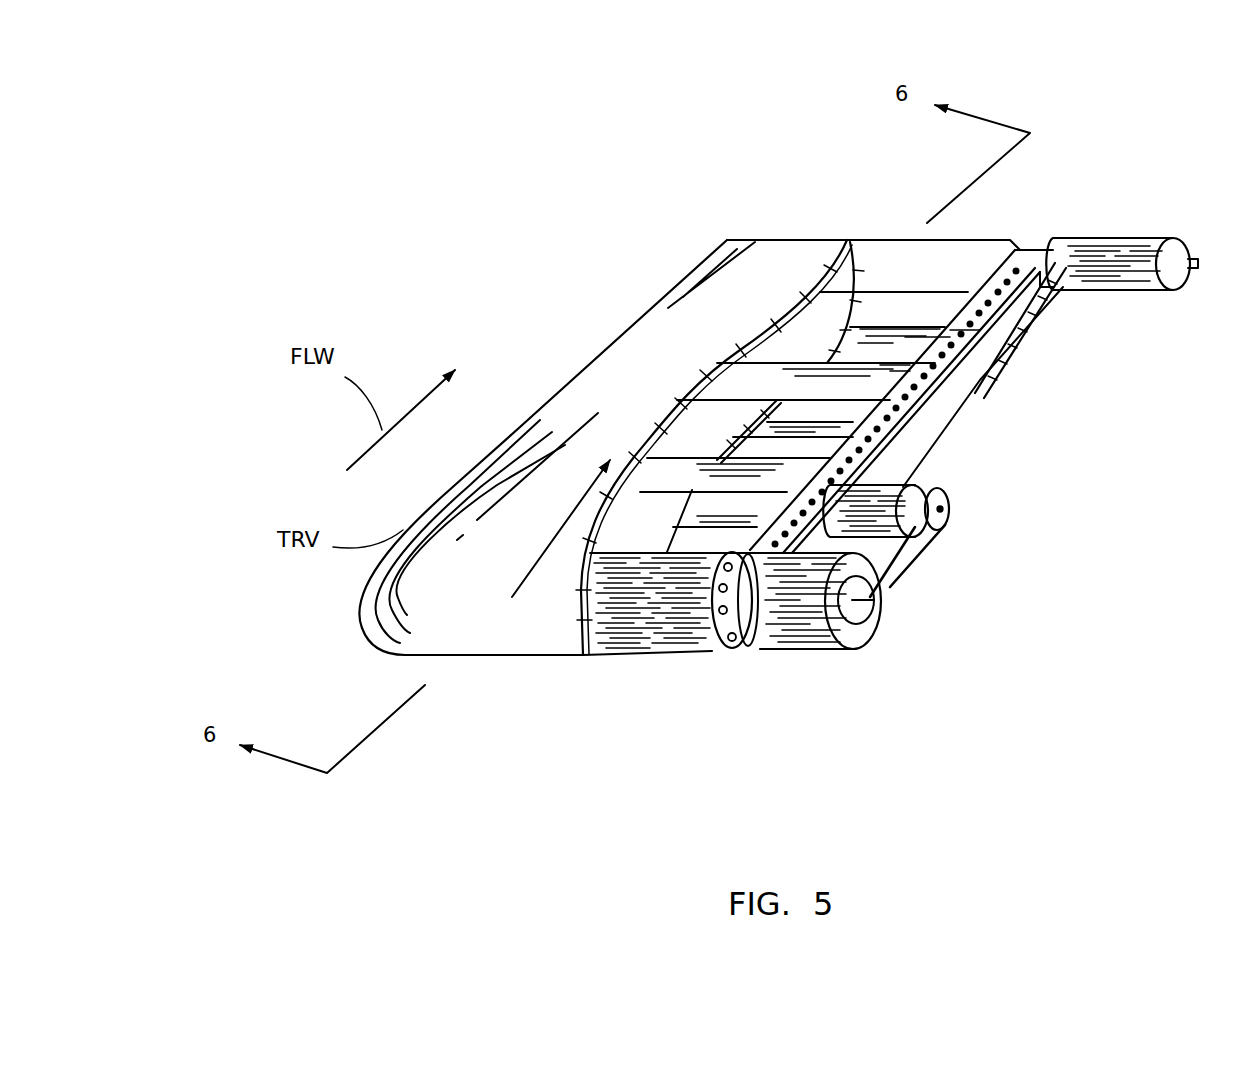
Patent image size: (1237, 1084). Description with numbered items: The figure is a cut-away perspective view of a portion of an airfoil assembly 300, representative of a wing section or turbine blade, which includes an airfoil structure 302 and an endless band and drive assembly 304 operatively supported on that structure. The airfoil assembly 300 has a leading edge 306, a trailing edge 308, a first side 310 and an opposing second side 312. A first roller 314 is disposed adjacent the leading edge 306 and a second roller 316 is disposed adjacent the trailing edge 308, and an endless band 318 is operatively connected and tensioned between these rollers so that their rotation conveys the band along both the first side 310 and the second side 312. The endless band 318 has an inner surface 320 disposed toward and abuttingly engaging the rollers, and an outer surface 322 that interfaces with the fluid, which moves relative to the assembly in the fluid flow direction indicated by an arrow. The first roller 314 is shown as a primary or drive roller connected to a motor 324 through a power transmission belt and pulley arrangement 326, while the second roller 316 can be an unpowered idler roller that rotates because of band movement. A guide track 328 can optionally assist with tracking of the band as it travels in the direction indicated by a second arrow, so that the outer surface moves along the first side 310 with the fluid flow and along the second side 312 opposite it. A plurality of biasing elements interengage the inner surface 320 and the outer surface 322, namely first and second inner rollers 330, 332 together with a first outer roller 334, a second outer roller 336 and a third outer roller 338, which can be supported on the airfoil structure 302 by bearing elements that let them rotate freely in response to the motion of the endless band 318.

The airfoil assembly 300 is at (457, 260).
The airfoil structure 302 is at (947, 415).
The endless band and drive assembly 304 is at (583, 343).
The leading edge 306 is at (323, 640).
The trailing edge 308 is at (713, 227).
The first side 310 is at (773, 200).
The second side 312 is at (597, 675).
The first roller 314 is at (632, 628).
The second roller 316 is at (933, 257).
The endless band 318 is at (653, 350).
The inner surface 320 is at (825, 307).
The outer surface 322 is at (750, 302).
The motor 324 is at (885, 482).
The power transmission belt and pulley arrangement 326 is at (930, 557).
The guide track 328 is at (988, 333).
The first inner roller 330 is at (667, 473).
The second inner roller 332 is at (858, 390).
The first outer roller 334 is at (683, 520).
The second outer roller 336 is at (762, 435).
The third outer roller 338 is at (940, 367).